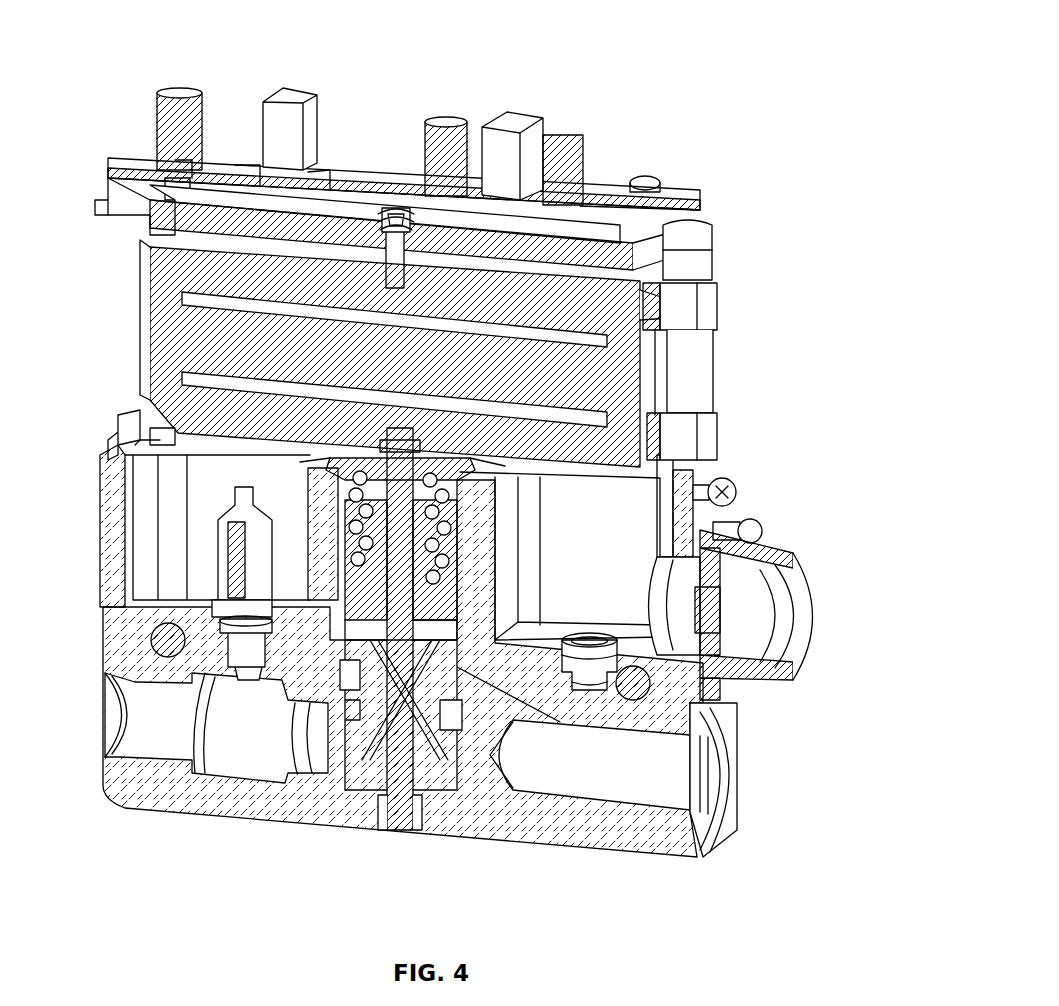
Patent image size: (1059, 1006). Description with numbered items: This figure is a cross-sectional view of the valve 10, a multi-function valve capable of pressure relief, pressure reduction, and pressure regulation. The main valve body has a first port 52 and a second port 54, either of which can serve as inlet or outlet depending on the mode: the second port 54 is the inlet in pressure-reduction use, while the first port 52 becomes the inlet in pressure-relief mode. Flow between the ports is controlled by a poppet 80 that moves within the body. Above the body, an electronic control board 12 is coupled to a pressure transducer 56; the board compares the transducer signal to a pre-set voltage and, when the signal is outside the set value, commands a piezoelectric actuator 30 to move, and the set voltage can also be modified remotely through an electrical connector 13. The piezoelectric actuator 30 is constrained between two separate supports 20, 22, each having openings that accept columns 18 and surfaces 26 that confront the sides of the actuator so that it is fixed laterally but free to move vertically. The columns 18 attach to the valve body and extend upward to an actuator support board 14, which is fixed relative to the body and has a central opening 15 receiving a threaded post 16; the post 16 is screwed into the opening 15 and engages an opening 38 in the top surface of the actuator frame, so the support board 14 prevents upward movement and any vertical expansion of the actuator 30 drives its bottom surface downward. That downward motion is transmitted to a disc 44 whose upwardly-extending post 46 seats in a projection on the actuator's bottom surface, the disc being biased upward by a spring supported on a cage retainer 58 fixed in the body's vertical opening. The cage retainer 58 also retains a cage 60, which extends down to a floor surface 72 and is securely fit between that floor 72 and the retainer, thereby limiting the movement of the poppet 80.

The valve 10 is at (655, 45).
The electronic control board 12 is at (673, 200).
The electrical connector 13 is at (802, 612).
The actuator support board 14 is at (138, 228).
The central opening 15 is at (397, 212).
The post 16 is at (407, 243).
The columns 18 is at (707, 362).
The support 20 is at (707, 300).
The support 22 is at (707, 432).
The surfaces 26 is at (153, 428).
The piezoelectric actuator 30 is at (152, 322).
The opening 38 is at (390, 277).
The disc 44 is at (538, 472).
The post 46 is at (310, 471).
The first port 52 is at (152, 712).
The second port 54 is at (677, 798).
The pressure transducer 56 is at (262, 565).
The cage retainer 58 is at (462, 567).
The cage 60 is at (367, 650).
The floor surface 72 is at (433, 780).
The poppet 80 is at (386, 762).